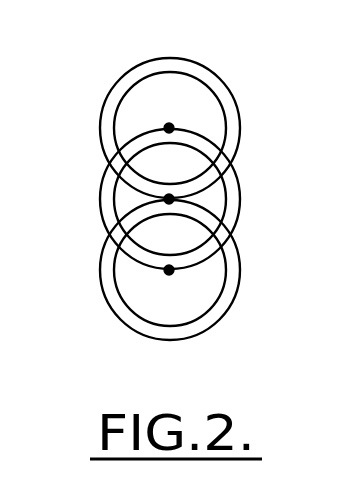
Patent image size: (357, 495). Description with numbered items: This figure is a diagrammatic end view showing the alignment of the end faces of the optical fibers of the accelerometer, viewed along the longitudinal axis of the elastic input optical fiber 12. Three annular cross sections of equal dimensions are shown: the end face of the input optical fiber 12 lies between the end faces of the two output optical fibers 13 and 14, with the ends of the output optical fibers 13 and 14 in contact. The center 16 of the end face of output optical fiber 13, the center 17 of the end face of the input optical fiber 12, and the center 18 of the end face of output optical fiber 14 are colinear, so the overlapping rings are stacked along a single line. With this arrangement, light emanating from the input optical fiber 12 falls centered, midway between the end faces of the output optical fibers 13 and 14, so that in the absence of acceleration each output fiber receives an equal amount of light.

The elastic input optical fiber 12 is at (100, 206).
The output optical fiber 13 is at (220, 74).
The output optical fiber 14 is at (238, 283).
The center of end face of output optical fiber 16 is at (169, 124).
The center of end face of input optical fiber 17 is at (170, 195).
The center of end face of output optical fiber 18 is at (169, 275).